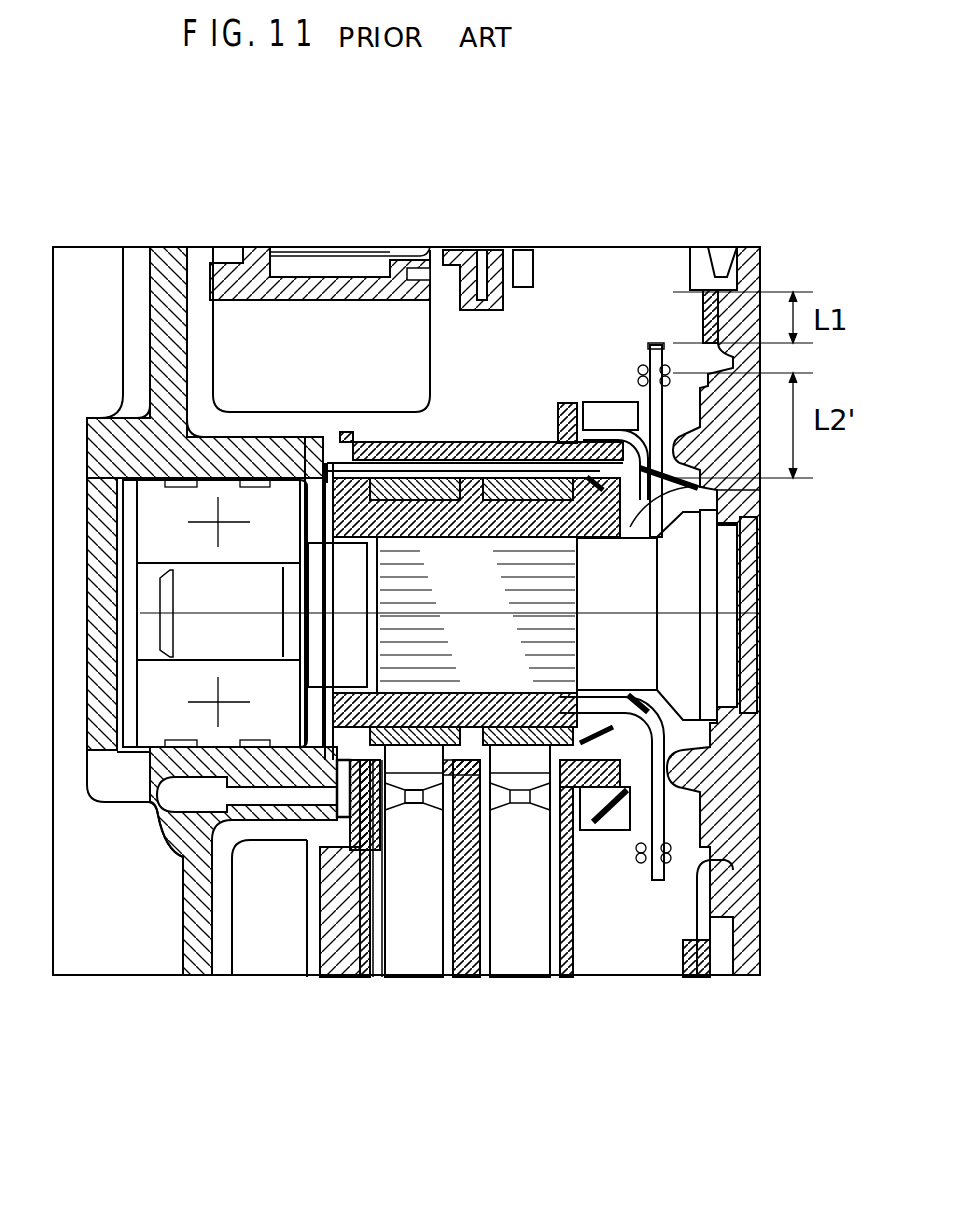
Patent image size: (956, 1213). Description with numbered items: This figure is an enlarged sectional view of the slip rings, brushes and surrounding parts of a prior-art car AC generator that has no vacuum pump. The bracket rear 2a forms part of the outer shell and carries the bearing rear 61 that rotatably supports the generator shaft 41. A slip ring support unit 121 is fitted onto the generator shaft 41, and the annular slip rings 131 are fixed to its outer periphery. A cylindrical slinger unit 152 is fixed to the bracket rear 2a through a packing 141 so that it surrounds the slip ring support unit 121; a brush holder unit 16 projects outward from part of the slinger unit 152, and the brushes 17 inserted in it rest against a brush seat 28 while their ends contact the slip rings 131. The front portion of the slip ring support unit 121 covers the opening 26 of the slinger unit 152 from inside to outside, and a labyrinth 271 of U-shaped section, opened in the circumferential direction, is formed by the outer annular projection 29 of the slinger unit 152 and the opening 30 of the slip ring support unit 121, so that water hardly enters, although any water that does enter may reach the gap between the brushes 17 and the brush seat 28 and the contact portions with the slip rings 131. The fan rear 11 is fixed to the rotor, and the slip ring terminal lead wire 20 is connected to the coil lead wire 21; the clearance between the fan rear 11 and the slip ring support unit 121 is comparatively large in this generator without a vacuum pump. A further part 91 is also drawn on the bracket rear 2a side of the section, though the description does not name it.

The bracket rear 2a is at (175, 265).
The bearing rear 61 is at (238, 490).
The packing 141 is at (363, 433).
The slinger unit 152 is at (445, 490).
The slip rings 131 is at (477, 440).
The outer annular projection 29 is at (562, 403).
The labyrinth 271 is at (653, 345).
The opening of the slip ring support unit 30 is at (588, 430).
The slip ring terminal lead wire 20 is at (660, 338).
The fan rear 11 is at (708, 285).
The coil lead wire 21 is at (735, 270).
The opening of the slinger unit 26 is at (722, 497).
The slip ring support unit 121 is at (632, 520).
The generator shaft 41 is at (683, 668).
The retaining bracket 91 is at (735, 807).
The brush seat 28 is at (438, 793).
The brushes 17 is at (428, 920).
The brush holder unit 16 is at (464, 927).